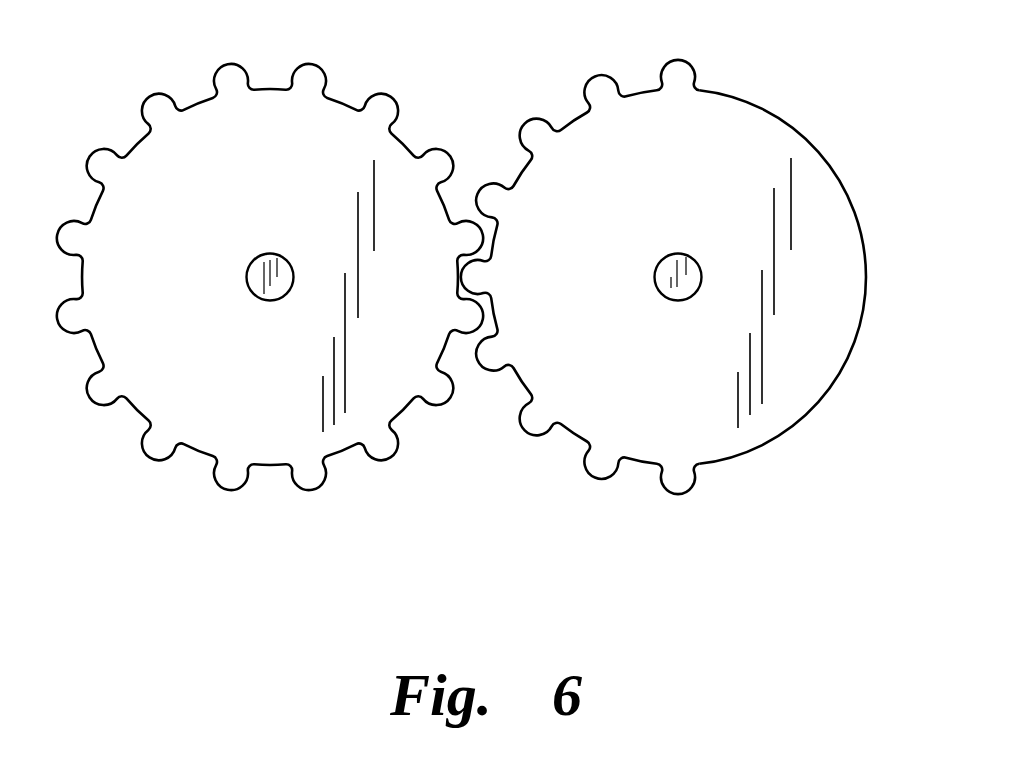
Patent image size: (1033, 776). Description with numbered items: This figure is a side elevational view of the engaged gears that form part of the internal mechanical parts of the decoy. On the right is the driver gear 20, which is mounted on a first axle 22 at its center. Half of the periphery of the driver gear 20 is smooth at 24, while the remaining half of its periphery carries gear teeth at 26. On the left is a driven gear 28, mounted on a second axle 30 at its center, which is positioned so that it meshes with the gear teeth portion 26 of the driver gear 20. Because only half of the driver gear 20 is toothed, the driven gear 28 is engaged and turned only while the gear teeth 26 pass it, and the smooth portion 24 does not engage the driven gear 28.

The driver gear 20 is at (697, 248).
The first axle 22 is at (661, 294).
The smooth periphery 24 is at (862, 192).
The gear teeth 26 is at (564, 78).
The driven gear 28 is at (270, 277).
The second axle 30 is at (262, 297).